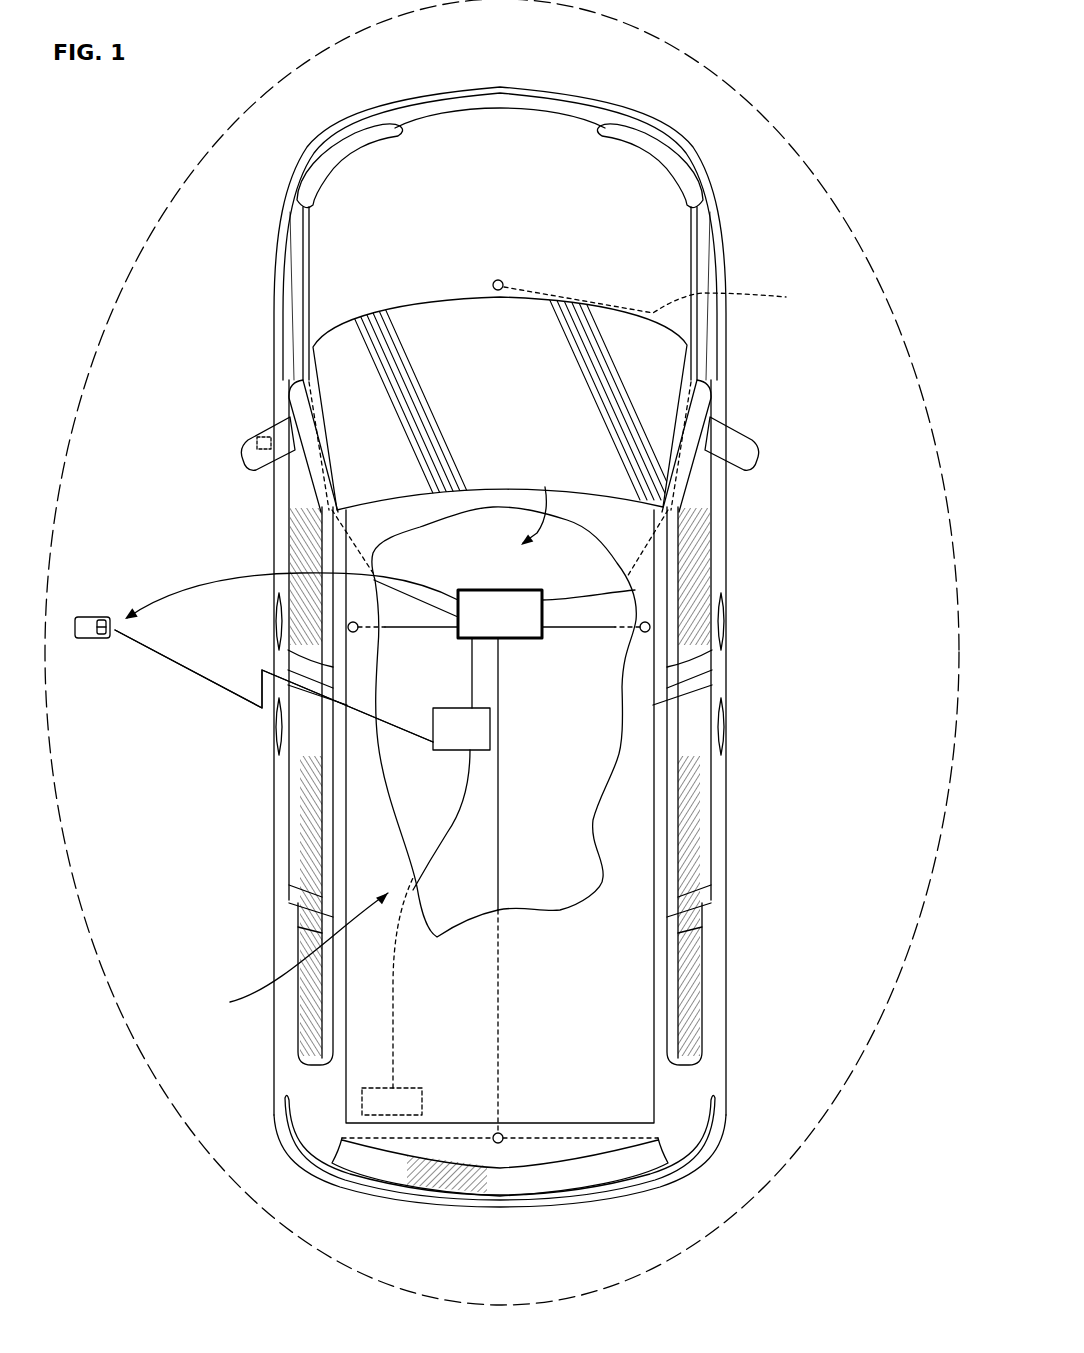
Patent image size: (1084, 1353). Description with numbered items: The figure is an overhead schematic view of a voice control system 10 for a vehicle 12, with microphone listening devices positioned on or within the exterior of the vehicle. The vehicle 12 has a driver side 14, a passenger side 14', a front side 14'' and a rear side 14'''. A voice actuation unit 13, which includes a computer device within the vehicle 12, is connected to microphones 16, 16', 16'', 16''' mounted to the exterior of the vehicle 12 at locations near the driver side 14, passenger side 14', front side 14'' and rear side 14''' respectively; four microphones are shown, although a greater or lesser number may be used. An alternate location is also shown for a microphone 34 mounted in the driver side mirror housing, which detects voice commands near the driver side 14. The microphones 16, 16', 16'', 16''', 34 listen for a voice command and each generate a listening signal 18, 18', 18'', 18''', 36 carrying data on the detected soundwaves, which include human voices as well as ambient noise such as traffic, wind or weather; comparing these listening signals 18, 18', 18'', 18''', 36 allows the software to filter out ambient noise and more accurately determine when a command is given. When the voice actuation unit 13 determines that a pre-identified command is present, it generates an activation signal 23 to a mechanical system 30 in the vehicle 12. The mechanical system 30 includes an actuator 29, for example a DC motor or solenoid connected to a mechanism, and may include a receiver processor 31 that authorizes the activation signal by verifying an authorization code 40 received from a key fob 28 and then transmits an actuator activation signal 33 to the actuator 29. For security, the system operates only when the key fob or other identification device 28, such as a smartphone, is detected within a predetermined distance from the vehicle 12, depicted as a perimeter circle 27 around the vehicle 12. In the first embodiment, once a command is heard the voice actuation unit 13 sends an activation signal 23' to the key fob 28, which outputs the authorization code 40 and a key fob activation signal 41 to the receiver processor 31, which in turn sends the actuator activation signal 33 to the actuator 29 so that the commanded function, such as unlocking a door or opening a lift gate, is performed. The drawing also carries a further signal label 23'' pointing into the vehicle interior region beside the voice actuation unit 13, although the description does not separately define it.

The voice control system 10 is at (506, 463).
The vehicle 12 is at (681, 226).
The voice actuation unit 13 is at (513, 623).
The driver side 14 is at (253, 576).
The passenger side 14' is at (748, 575).
The front side 14'' is at (572, 493).
The rear side 14''' is at (530, 1196).
The microphone 16 is at (294, 646).
The microphone 16' is at (722, 646).
The microphone 16'' is at (530, 263).
The microphone 16''' is at (500, 1109).
The listening signal 18 is at (408, 649).
The listening signal 18' is at (591, 649).
The listening signal 18'' is at (666, 296).
The listening signal 18''' is at (551, 885).
The activation signal 23 is at (441, 673).
The activation signal 23' is at (291, 608).
The interior communication zone 23'' is at (504, 722).
The perimeter circle 27 is at (72, 458).
The key fob 28 is at (92, 617).
The actuator 29 is at (421, 1098).
The mechanical system 30 is at (294, 955).
The receiver processor 31 is at (443, 752).
The actuator activation signal 33 is at (437, 856).
The microphone 34 is at (255, 440).
The listening signal 36 is at (322, 488).
The authorization code 40 is at (156, 652).
The key fob activation signal 41 is at (156, 652).